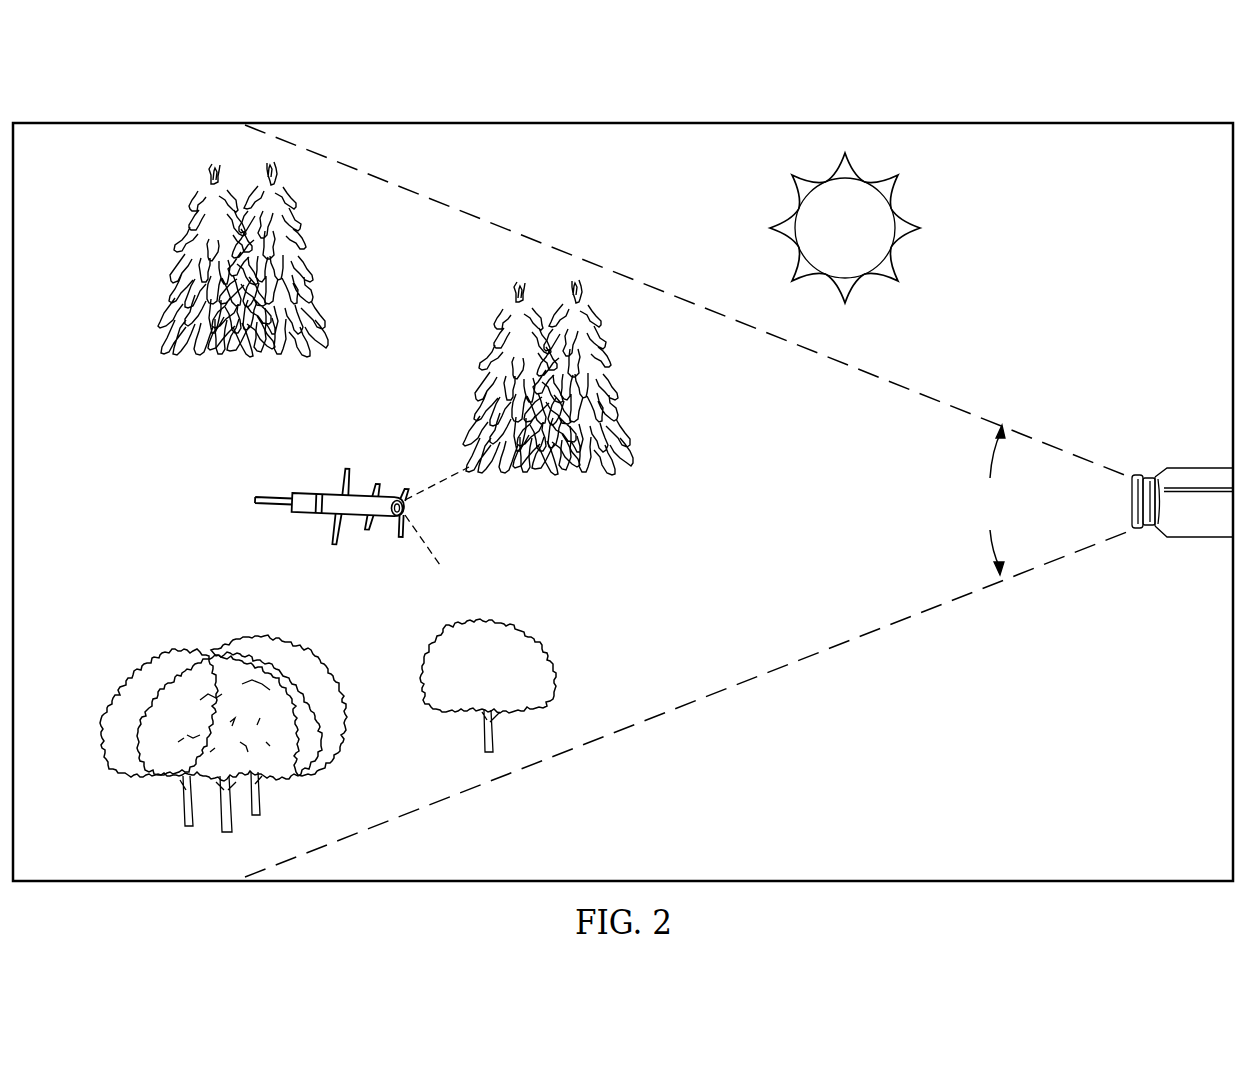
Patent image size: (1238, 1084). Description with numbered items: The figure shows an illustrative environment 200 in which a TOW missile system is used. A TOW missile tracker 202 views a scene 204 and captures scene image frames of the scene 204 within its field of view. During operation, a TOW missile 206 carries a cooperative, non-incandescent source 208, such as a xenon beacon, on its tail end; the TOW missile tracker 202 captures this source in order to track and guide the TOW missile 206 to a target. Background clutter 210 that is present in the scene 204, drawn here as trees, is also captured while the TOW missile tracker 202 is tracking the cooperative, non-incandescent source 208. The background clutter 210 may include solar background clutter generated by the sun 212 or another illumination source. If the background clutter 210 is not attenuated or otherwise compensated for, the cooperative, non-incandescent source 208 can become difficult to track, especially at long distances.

The illustrative environment 200 is at (140, 122).
The TOW missile tracker 202 is at (1200, 467).
The scene 204 is at (742, 492).
The TOW missile 206 is at (312, 517).
The cooperative, non-incandescent source 208 is at (406, 508).
The background clutter 210 is at (130, 437).
The sun 212 is at (894, 208).